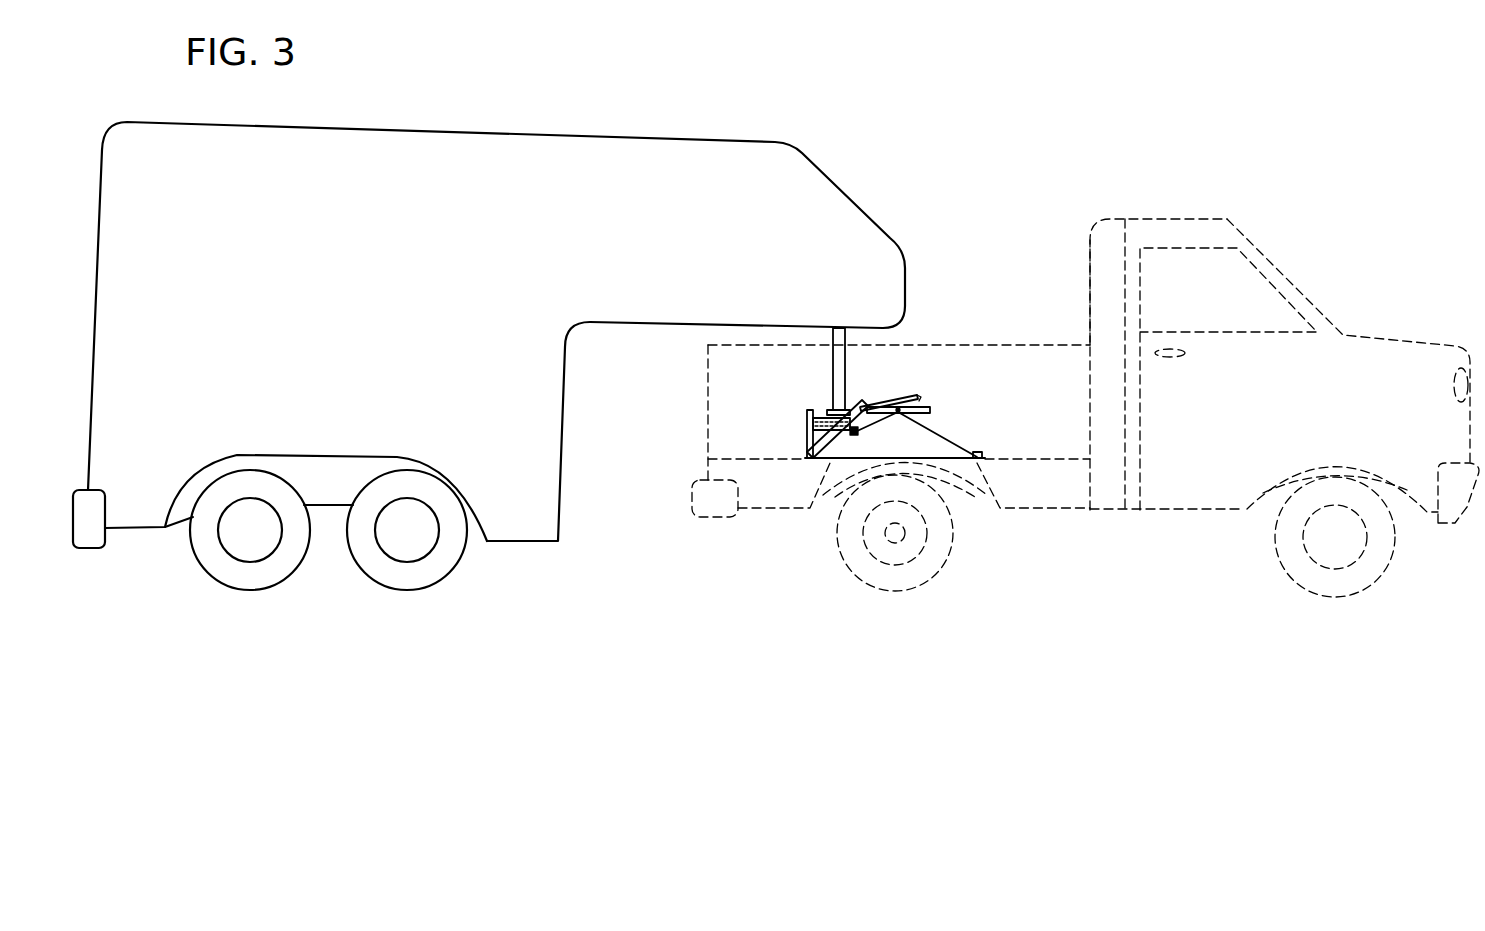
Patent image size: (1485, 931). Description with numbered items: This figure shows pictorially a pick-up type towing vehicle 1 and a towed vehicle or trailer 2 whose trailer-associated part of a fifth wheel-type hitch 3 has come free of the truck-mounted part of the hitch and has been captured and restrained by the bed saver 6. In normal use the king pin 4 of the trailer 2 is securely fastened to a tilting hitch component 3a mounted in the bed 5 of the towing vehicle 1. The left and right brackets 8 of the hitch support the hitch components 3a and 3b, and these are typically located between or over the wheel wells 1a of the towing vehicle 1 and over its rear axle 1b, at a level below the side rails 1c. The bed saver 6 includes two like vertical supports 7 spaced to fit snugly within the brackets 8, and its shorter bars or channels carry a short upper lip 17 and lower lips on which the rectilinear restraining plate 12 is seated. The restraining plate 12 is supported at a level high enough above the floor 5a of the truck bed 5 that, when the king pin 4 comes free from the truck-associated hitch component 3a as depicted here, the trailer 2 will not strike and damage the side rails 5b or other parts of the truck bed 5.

The towing vehicle 1 is at (1228, 218).
The wheel wells 1a is at (997, 512).
The rear axle 1b is at (885, 534).
The side rails 1c is at (1003, 343).
The trailer 2 is at (733, 233).
The fifth wheel-type hitch 3 is at (889, 370).
The tilting hitch component 3a is at (918, 397).
The hitch component 3b is at (930, 410).
The king pin 4 is at (837, 335).
The bed 5 is at (700, 424).
The floor 5a is at (1010, 460).
The side rails 5b is at (1033, 355).
The bed saver 6 is at (770, 375).
The vertical supports 7 is at (805, 418).
The brackets 8 is at (957, 443).
The restraining plate 12 is at (863, 428).
The upper lip 17 is at (833, 418).